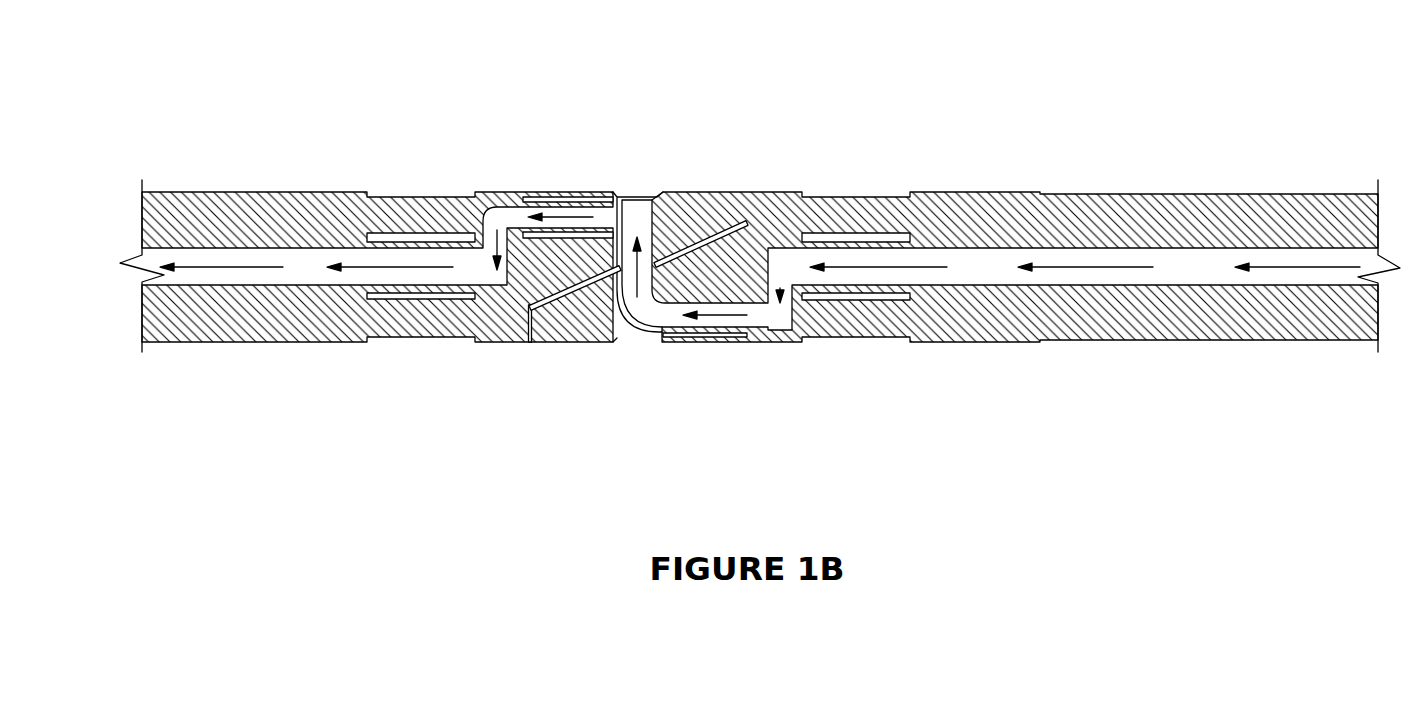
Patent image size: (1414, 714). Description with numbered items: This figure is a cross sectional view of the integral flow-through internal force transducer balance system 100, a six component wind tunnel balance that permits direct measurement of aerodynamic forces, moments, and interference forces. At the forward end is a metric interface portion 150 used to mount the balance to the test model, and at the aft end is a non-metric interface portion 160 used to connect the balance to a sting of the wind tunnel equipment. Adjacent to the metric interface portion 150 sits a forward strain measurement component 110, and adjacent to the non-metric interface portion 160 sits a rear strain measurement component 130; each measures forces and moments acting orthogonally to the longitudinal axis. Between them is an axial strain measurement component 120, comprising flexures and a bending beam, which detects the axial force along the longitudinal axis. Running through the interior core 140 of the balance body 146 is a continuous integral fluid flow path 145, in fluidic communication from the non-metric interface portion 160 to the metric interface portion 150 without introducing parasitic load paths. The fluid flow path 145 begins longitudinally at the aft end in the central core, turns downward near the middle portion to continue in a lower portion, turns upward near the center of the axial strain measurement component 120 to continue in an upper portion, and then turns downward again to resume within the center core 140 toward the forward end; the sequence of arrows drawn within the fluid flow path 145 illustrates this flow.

The internal force transducer balance system 100 is at (508, 42).
The forward strain measurement component 110 is at (365, 355).
The axial strain measurement component 120 is at (473, 360).
The rear strain measurement component 130 is at (803, 360).
The interior core 140 is at (983, 275).
The fluid flow path 145 is at (1108, 268).
The balance body 146 is at (788, 193).
The metric interface portion 150 is at (265, 192).
The non-metric interface portion 160 is at (1112, 193).